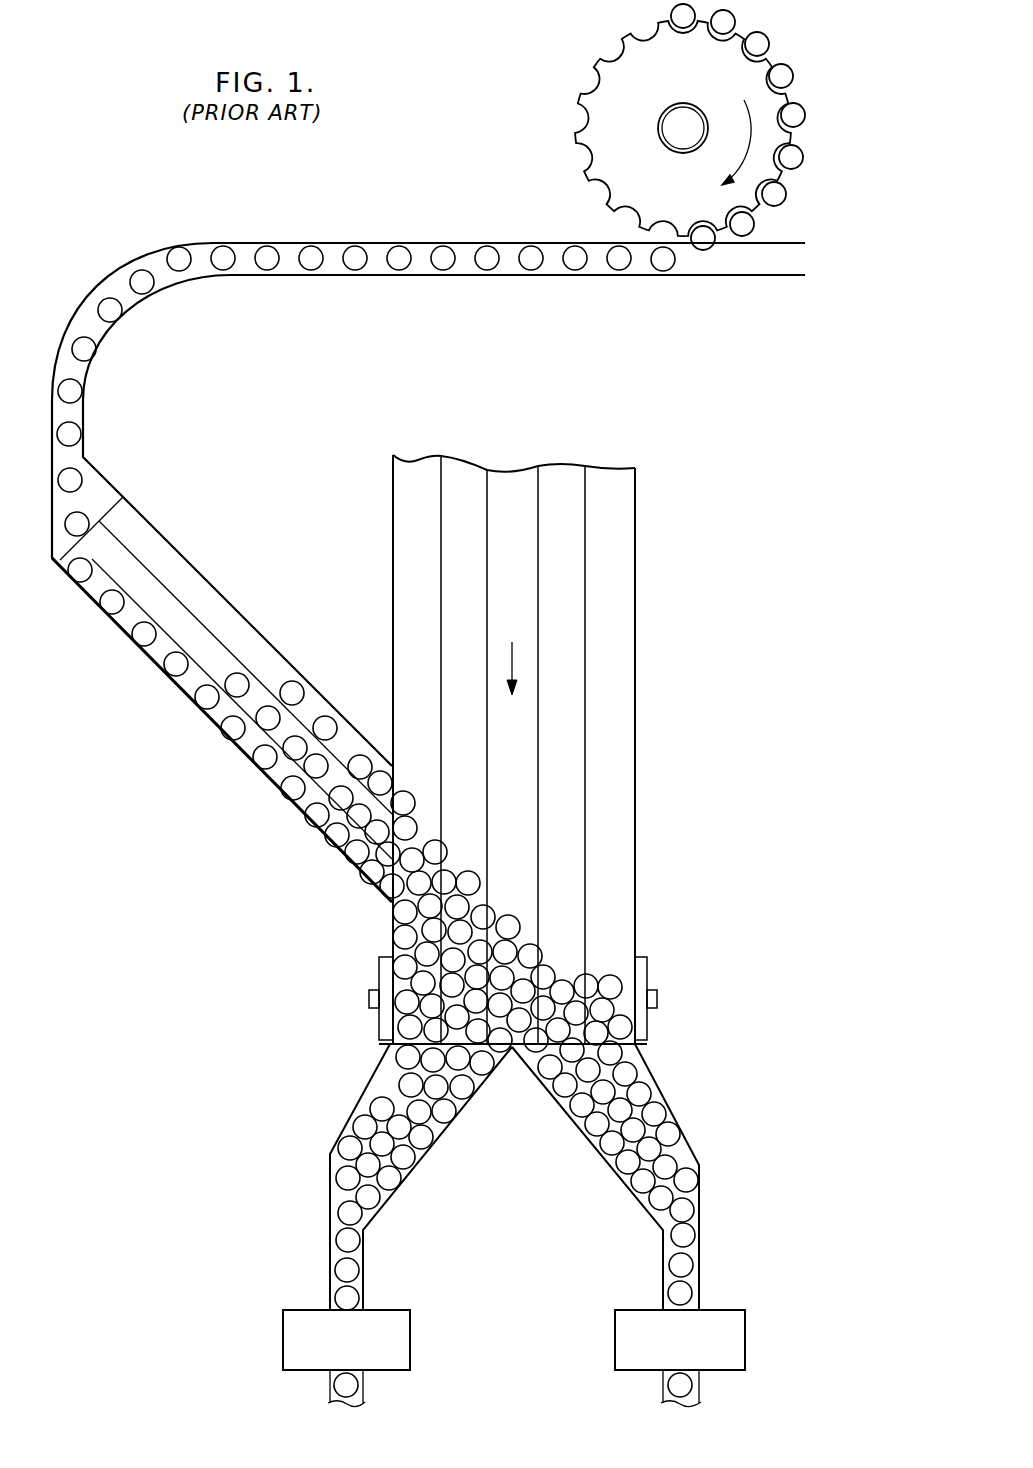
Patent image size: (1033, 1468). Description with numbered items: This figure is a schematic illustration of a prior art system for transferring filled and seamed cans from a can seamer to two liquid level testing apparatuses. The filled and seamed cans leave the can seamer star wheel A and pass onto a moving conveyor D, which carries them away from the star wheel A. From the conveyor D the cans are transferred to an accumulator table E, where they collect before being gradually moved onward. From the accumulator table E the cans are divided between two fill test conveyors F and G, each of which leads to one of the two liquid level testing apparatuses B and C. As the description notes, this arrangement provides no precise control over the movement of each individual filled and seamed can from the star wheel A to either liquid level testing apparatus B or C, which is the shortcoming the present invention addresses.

The can seamer star wheel A is at (580, 103).
The liquid level testing apparatus B is at (283, 1320).
The liquid level testing apparatus C is at (740, 1322).
The moving conveyor D is at (415, 268).
The accumulator table E is at (392, 905).
The fill test conveyor F is at (330, 1232).
The fill test conveyor G is at (690, 1253).